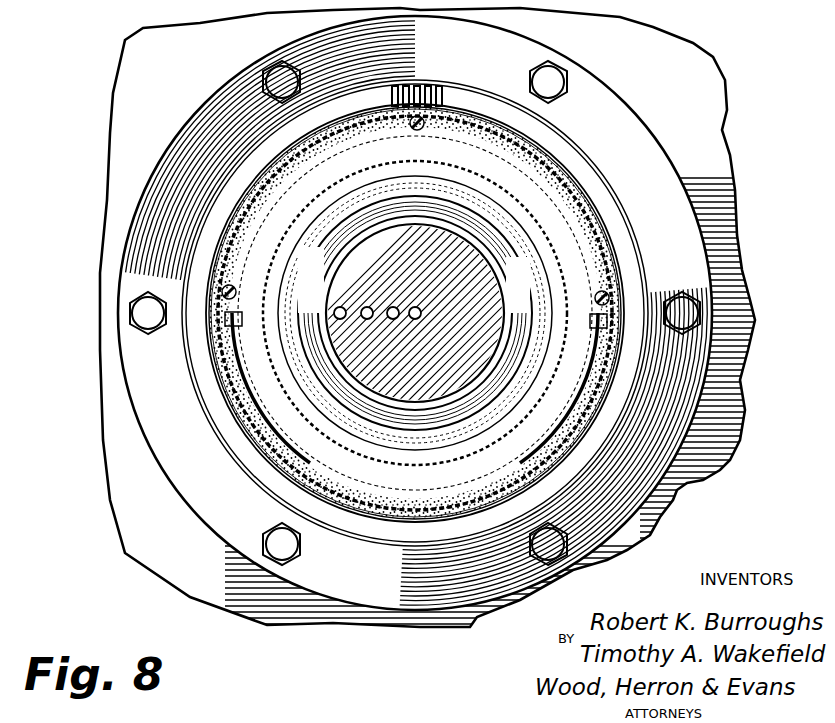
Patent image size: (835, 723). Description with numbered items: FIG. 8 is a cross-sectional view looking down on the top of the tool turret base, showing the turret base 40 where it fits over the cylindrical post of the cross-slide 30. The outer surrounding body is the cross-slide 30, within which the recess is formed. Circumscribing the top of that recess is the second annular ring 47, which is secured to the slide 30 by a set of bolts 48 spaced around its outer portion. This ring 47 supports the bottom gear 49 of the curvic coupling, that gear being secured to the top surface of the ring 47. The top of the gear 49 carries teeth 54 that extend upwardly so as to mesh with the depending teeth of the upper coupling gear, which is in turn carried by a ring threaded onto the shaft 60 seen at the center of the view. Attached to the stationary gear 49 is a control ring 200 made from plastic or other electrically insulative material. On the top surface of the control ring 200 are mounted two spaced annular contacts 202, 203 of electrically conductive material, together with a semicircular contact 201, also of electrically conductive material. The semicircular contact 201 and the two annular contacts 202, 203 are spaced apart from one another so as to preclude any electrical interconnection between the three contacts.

The cross-slide 30 is at (737, 205).
The turret base 40 is at (678, 163).
The second annular ring 47 is at (618, 130).
The bolts 48 is at (556, 76).
The bottom gear 49 is at (550, 138).
The teeth 54 is at (448, 95).
The shaft 60 is at (401, 243).
The control ring 200 is at (441, 313).
The semicircular contact 201 is at (415, 313).
The annular contact 202 is at (415, 313).
The annular contact 203 is at (415, 313).